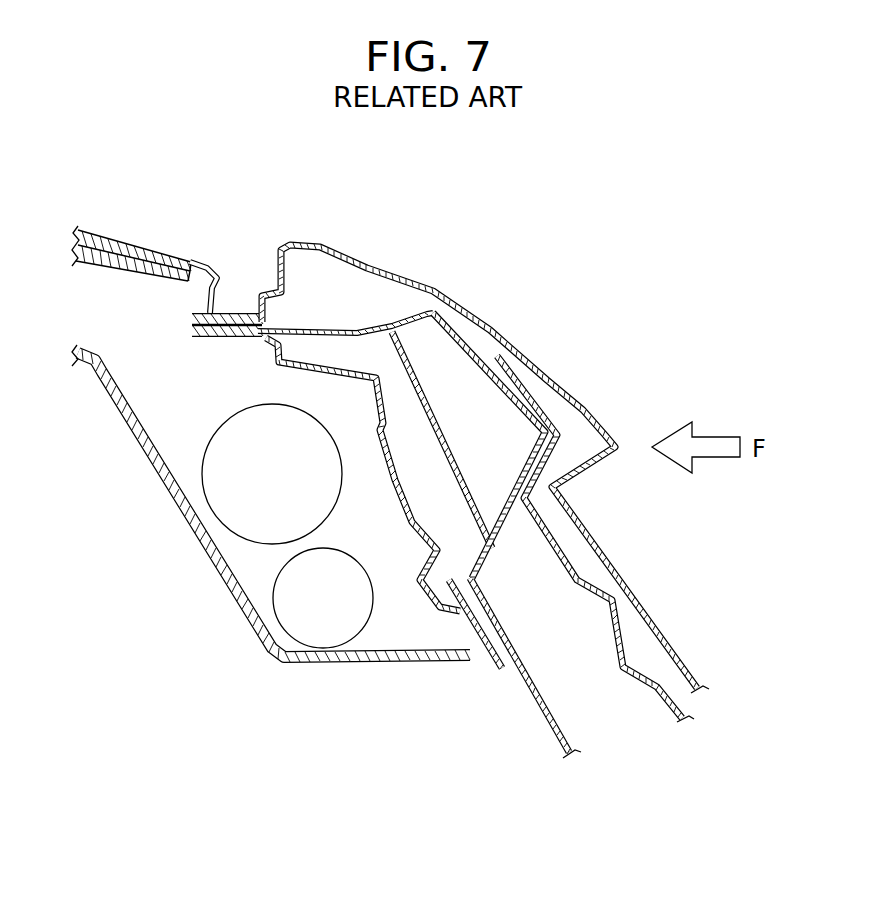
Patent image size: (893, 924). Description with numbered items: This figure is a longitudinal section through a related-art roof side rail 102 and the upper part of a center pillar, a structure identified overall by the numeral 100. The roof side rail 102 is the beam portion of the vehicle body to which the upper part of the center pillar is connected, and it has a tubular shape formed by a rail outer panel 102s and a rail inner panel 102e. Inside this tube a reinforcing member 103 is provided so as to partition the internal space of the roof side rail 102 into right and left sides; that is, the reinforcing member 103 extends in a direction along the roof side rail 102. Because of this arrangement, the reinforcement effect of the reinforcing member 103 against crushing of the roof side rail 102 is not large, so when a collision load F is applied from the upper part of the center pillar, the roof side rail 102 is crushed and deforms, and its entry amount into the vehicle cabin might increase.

The vehicle body structure (related art) 100 is at (640, 566).
The roof side rail 102 is at (482, 347).
The rail inner panel 102e is at (375, 445).
The rail outer panel 102s is at (462, 333).
The reinforcing member 103 is at (414, 378).